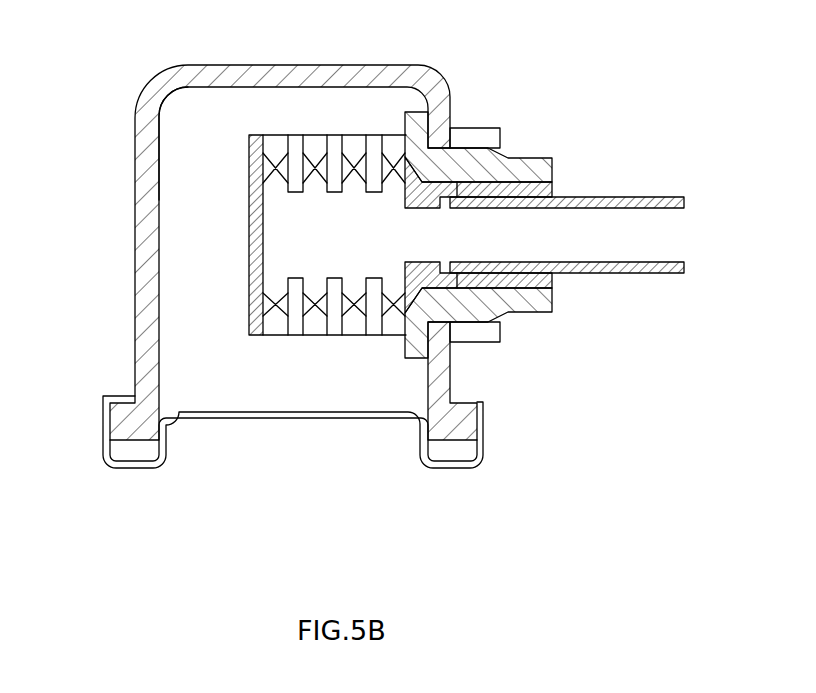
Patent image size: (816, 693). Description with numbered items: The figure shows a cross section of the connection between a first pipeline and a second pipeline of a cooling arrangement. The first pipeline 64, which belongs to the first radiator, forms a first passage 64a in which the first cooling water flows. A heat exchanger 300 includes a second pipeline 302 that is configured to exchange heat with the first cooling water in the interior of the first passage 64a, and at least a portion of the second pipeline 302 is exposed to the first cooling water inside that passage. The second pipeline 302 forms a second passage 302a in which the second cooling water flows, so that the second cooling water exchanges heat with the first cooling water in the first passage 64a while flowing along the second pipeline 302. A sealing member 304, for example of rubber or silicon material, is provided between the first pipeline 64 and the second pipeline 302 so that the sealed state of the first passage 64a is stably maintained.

The first pipeline 64 is at (150, 309).
The first passage 64a is at (196, 166).
The heat exchanger 300 is at (366, 131).
The second pipeline 302 is at (232, 171).
The second passage 302a is at (316, 225).
The sealing member 304 is at (460, 308).